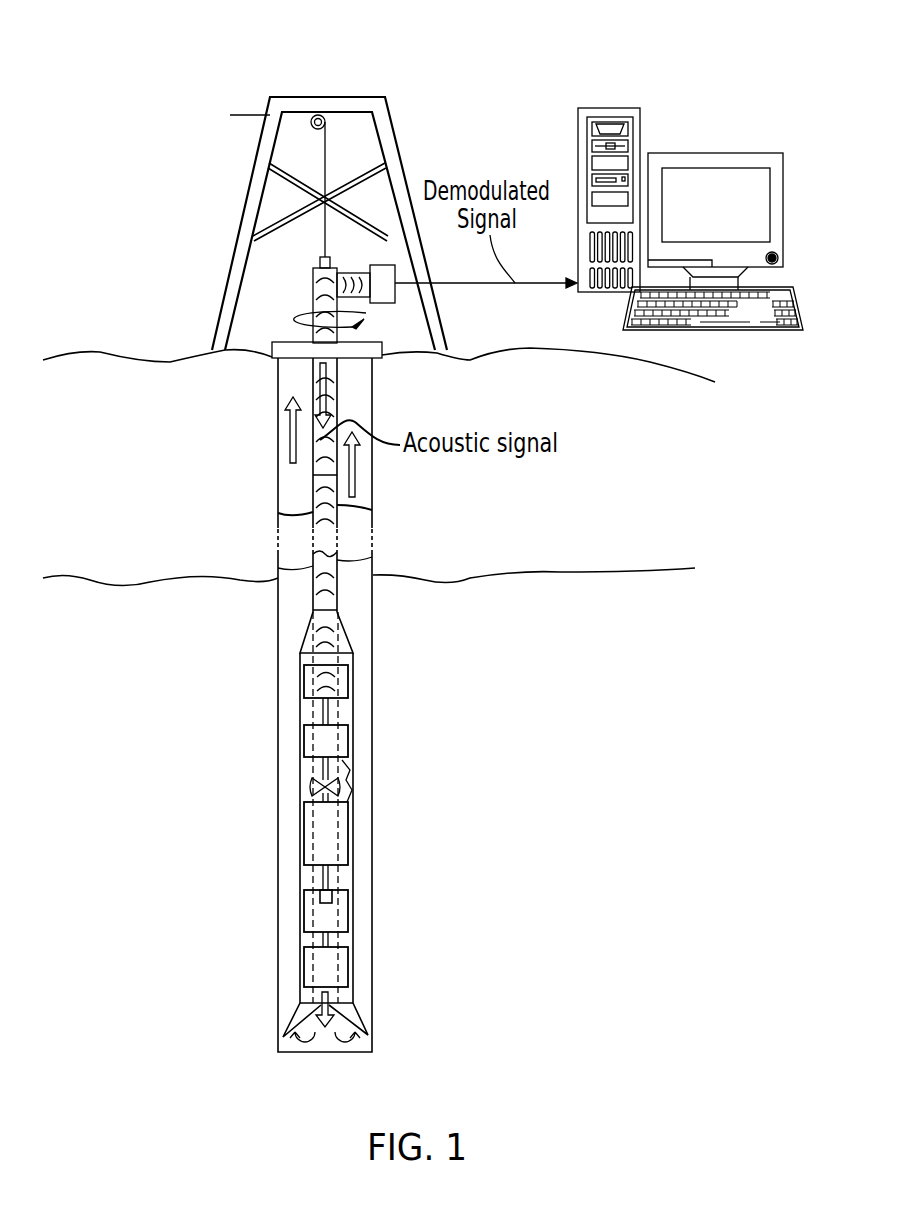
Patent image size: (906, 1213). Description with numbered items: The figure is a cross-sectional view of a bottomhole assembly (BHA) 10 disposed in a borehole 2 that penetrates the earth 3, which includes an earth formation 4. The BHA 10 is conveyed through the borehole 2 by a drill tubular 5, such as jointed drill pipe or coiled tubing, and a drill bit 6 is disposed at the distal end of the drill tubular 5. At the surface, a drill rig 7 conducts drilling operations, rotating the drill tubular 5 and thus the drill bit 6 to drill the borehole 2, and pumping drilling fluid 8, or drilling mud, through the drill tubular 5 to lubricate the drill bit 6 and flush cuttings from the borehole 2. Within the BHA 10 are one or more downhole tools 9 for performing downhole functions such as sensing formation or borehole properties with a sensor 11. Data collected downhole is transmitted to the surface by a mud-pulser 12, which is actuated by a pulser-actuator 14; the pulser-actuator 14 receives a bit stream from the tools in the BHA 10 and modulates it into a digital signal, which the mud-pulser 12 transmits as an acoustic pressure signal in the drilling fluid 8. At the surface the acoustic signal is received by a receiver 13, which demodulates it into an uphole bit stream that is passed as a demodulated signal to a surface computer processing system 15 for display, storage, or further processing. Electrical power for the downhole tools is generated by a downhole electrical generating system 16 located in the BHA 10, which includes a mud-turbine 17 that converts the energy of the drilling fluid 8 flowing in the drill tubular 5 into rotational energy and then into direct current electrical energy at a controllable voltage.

The borehole 2 is at (278, 418).
The earth 3 is at (618, 405).
The earth formation 4 is at (686, 613).
The drill tubular 5 is at (313, 490).
The drill bit 6 is at (352, 1010).
The drill rig 7 is at (167, 247).
The drilling fluid 8 is at (340, 490).
The downhole tool 9 is at (305, 906).
The bottomhole assembly (BHA) 10 is at (303, 642).
The sensor 11 is at (333, 895).
The mud-pulser 12 is at (305, 680).
The receiver 13 is at (385, 265).
The pulser-actuator 14 is at (305, 745).
The surface computer processing system 15 is at (610, 70).
The downhole electrical generating system 16 is at (377, 777).
The mud-turbine 17 is at (312, 786).